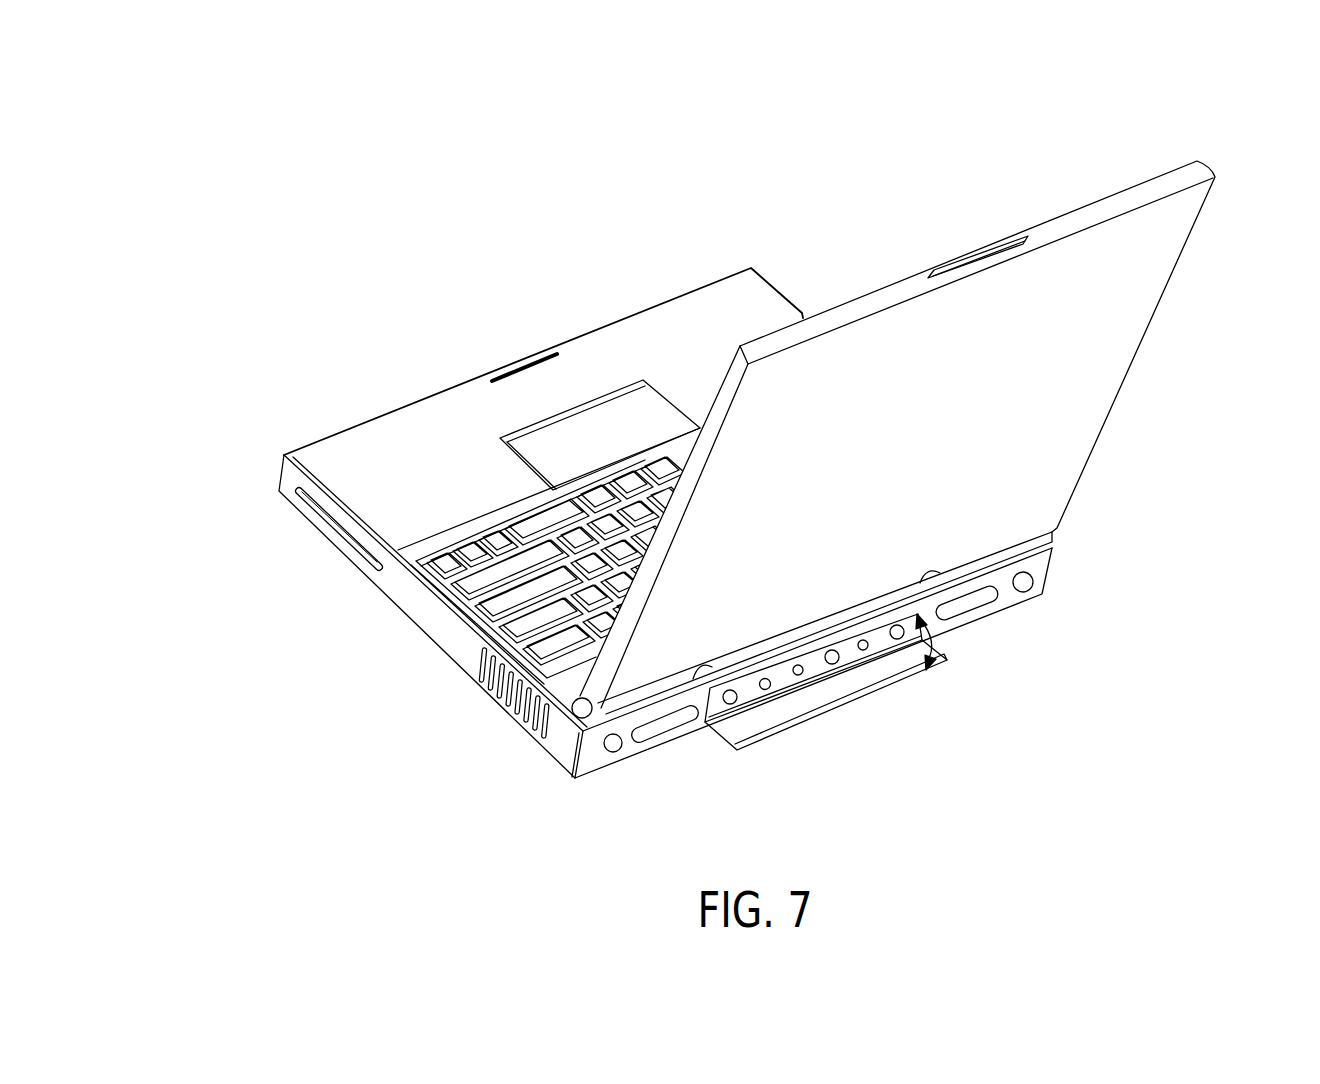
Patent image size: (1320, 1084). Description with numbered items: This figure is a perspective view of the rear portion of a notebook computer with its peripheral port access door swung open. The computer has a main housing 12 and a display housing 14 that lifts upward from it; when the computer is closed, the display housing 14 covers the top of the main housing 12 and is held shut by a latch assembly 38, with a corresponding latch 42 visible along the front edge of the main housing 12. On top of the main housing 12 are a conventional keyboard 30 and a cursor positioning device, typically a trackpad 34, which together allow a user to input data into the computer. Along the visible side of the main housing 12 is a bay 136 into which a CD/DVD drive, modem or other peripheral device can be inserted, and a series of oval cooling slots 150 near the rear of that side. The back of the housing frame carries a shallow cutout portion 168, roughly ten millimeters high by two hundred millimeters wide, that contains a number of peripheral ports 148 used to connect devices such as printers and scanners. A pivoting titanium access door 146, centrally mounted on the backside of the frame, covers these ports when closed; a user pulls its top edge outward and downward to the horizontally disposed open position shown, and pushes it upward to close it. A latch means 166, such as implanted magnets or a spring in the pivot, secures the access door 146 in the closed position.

The main housing 12 is at (811, 282).
The display housing 14 is at (1172, 315).
The keyboard 30 is at (490, 613).
The trackpad 34 is at (605, 452).
The latch assembly 38 is at (976, 253).
The base latch 42 is at (527, 363).
The bay 136 is at (315, 527).
The access door 146 is at (744, 727).
The peripheral ports 148 is at (770, 690).
The oval cooling slots 150 is at (532, 718).
The latch means 166 is at (842, 705).
The cutout portion 168 is at (880, 637).